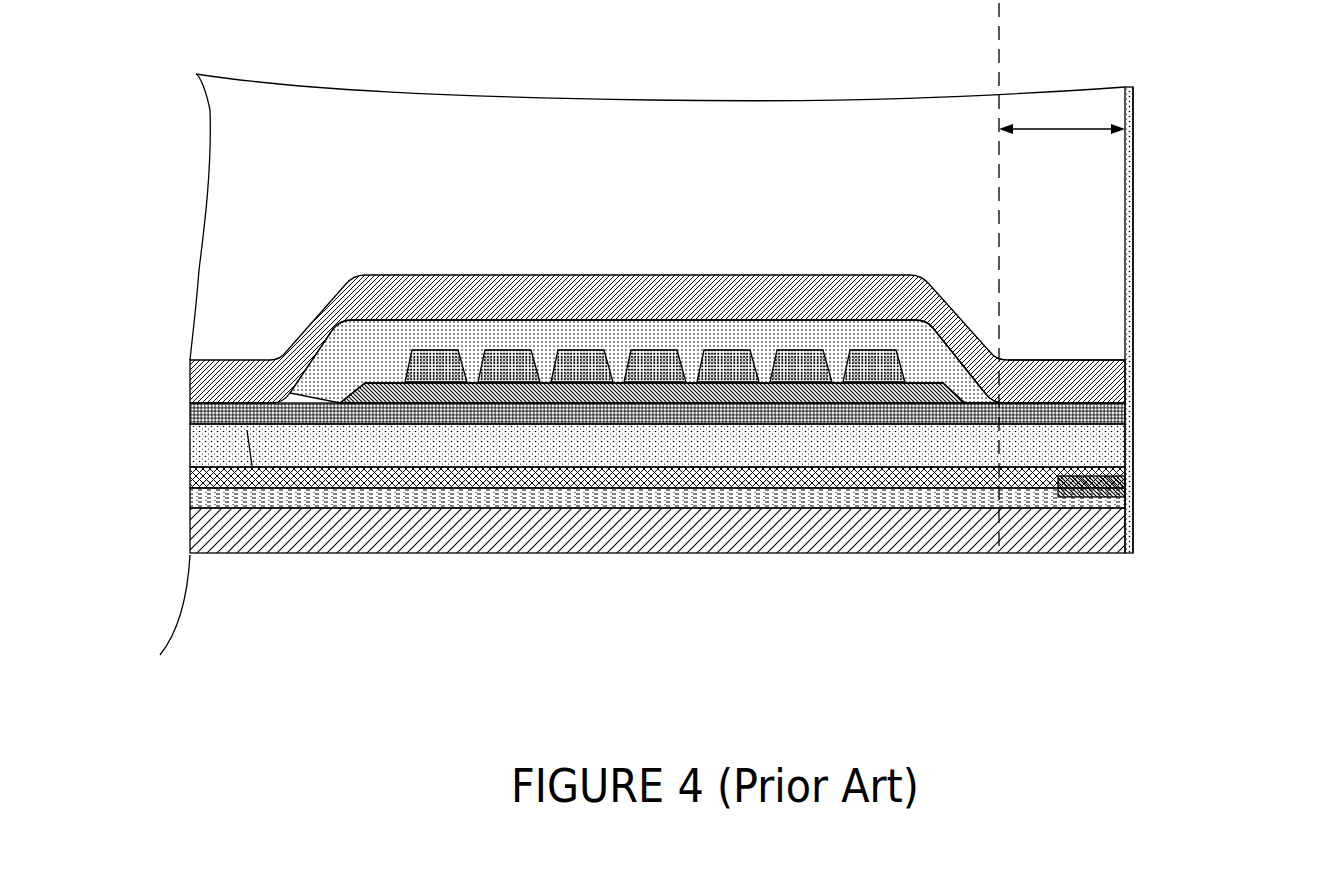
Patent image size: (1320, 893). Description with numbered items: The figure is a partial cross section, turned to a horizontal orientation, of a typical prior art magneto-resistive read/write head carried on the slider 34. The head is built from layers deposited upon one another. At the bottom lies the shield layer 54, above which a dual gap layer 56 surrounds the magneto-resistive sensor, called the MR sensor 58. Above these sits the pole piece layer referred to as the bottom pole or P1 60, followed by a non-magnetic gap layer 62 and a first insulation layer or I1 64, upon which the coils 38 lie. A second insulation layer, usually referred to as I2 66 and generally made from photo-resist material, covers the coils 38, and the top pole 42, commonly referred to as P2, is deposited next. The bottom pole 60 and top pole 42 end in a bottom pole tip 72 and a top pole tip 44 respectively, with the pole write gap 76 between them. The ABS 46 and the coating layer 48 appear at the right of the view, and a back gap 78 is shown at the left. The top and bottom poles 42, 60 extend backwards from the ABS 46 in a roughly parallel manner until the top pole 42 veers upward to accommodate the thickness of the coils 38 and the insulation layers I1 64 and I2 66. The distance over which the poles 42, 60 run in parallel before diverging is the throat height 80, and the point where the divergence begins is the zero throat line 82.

The slider 34 is at (559, 163).
The coils 38 is at (503, 350).
The top pole 42 is at (822, 275).
The top pole tip 44 is at (1140, 392).
The ABS 46 is at (1145, 295).
The coating layer 48 is at (1133, 214).
The shield layer 54 is at (985, 535).
The dual gap layer 56 is at (782, 477).
The MR sensor 58 is at (1110, 488).
The bottom pole 60 is at (602, 440).
The non-magnetic gap layer 62 is at (247, 430).
The first insulation layer 64 is at (958, 392).
The second insulation layer 66 is at (845, 345).
The bottom pole tip 72 is at (1140, 440).
The pole write gap 76 is at (1118, 418).
The back gap 78 is at (219, 398).
The throat height 80 is at (1062, 116).
The zero throat line 82 is at (998, 88).